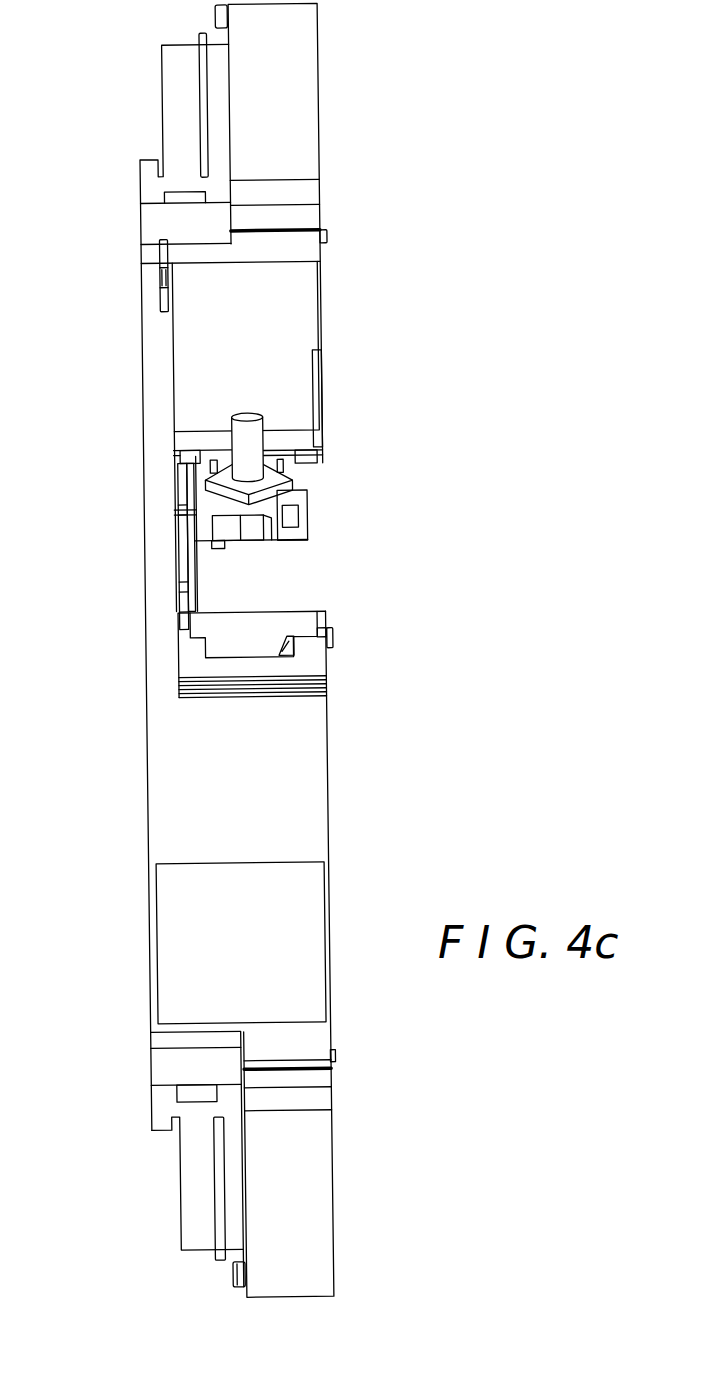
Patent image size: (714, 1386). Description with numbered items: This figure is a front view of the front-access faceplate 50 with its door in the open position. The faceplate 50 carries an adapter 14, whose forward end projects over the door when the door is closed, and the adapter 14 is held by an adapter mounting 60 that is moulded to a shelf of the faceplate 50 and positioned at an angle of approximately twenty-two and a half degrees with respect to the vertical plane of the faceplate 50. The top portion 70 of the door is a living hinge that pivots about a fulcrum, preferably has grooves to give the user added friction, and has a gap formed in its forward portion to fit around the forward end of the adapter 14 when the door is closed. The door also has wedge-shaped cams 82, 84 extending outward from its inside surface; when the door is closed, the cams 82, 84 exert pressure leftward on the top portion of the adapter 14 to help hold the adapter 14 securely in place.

The faceplate 50 is at (366, 186).
The adapter 14 is at (247, 441).
The adapter mounting 60 is at (307, 519).
The top portion 70 is at (200, 661).
The cam 82 is at (283, 637).
The cam 84 is at (297, 647).